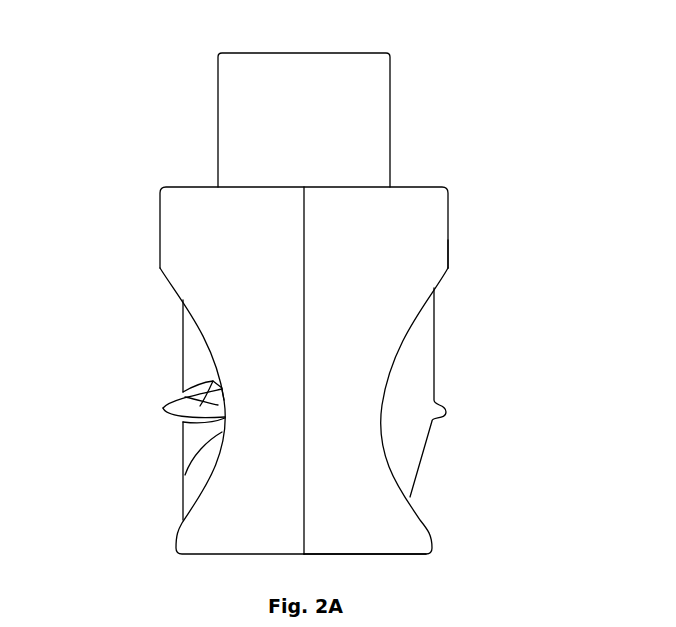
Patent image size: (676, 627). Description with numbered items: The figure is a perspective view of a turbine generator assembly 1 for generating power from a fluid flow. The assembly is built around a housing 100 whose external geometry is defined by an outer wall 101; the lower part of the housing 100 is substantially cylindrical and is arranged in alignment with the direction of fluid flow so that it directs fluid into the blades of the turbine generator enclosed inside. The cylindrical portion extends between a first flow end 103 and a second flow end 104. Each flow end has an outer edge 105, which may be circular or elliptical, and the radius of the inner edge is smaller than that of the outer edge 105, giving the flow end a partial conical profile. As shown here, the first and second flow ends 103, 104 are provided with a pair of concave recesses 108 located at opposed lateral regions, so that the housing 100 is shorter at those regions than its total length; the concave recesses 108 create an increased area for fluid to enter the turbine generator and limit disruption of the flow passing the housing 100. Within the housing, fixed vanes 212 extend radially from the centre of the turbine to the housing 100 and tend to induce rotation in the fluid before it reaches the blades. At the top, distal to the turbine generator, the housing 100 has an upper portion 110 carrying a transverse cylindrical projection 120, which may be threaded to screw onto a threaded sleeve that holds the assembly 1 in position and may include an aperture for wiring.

The turbine generator assembly 1 is at (138, 144).
The transverse cylindrical projection 120 is at (218, 166).
The upper portion 110 is at (160, 200).
The housing 100 is at (448, 252).
The first flow end 103 is at (153, 277).
The second flow end 104 is at (450, 278).
The fixed vanes 212 is at (198, 360).
The concave recess 108 is at (163, 408).
The outer edge 105 is at (185, 475).
The outer wall 101 is at (417, 555).